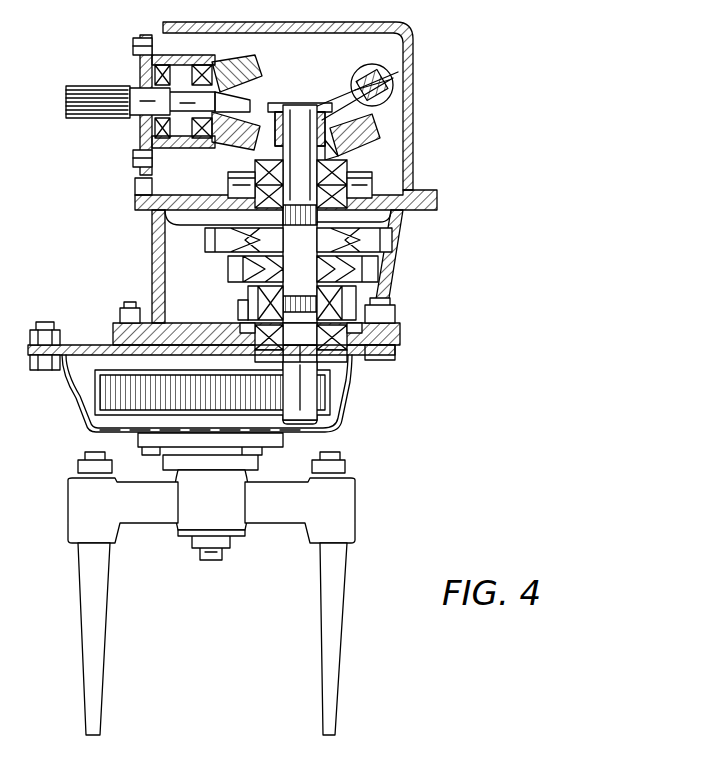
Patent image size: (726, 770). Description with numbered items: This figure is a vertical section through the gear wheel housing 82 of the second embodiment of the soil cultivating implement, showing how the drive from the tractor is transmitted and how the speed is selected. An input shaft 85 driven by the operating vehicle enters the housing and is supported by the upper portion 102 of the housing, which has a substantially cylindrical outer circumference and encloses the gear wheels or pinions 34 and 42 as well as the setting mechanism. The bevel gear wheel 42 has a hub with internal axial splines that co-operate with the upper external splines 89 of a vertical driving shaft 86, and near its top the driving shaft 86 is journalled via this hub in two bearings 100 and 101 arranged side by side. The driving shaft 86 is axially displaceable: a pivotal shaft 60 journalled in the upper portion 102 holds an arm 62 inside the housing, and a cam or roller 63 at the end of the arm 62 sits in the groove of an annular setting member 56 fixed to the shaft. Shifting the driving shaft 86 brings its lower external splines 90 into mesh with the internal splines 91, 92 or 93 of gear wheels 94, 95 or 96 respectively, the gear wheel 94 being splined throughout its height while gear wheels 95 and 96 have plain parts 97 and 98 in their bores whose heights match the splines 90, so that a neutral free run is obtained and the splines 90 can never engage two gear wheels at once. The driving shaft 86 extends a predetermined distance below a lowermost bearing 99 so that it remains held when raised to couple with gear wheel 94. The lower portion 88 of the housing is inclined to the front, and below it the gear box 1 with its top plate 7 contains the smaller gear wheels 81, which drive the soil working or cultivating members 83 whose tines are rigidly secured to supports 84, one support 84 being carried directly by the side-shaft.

The gear box 1 is at (72, 391).
The top plate 7 is at (86, 340).
The gear wheel or pinion 34 is at (228, 72).
The bevel gear wheel 42 is at (352, 128).
The setting member 56 is at (282, 103).
The pivotal shaft 60 is at (398, 72).
The arm 62 is at (346, 80).
The cam or roller 63 is at (306, 103).
The gear wheels 81 is at (115, 392).
The gear wheel housing 82 is at (414, 32).
The soil working or cultivating members 83 is at (88, 603).
The supports 84 is at (295, 518).
The input shaft 85 is at (92, 76).
The driving shaft 86 is at (297, 168).
The lower portion 88 is at (408, 272).
The external splines 89 is at (320, 209).
The external splines 90 is at (298, 312).
The internal splines 91 is at (330, 236).
The internal splines 92 is at (320, 282).
The internal splines 93 is at (308, 318).
The gear wheel 94 is at (214, 241).
The gear wheel 95 is at (228, 267).
The gear wheel 96 is at (248, 290).
The plain part 97 is at (327, 259).
The plain part 98 is at (258, 298).
The lowermost bearing 99 is at (356, 382).
The bearing 100 is at (347, 172).
The bearing 101 is at (240, 182).
The upper portion 102 is at (417, 128).